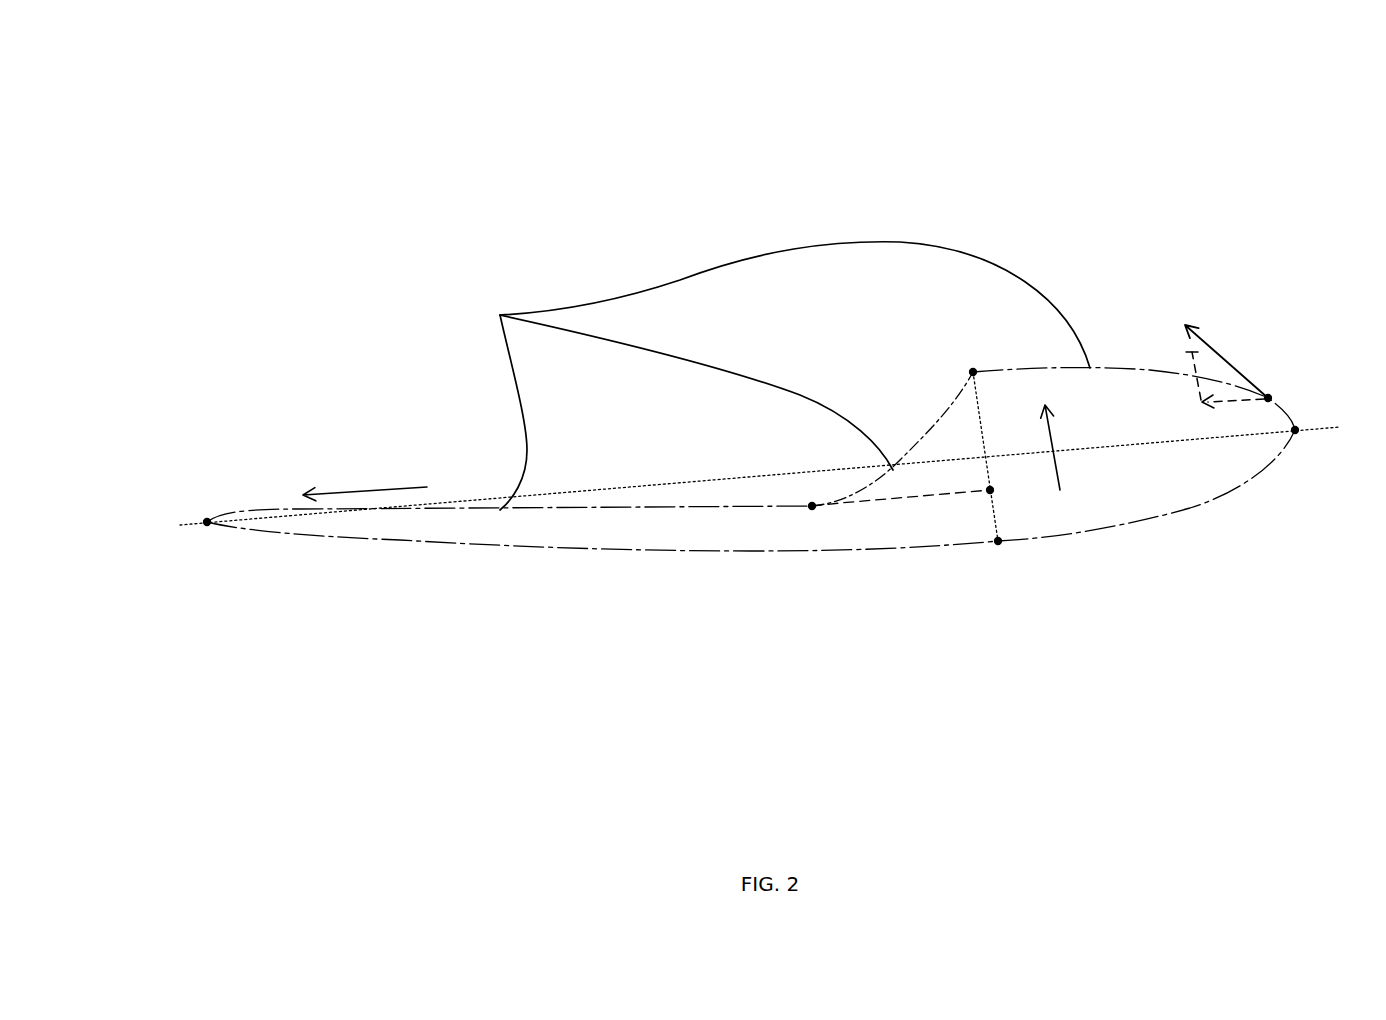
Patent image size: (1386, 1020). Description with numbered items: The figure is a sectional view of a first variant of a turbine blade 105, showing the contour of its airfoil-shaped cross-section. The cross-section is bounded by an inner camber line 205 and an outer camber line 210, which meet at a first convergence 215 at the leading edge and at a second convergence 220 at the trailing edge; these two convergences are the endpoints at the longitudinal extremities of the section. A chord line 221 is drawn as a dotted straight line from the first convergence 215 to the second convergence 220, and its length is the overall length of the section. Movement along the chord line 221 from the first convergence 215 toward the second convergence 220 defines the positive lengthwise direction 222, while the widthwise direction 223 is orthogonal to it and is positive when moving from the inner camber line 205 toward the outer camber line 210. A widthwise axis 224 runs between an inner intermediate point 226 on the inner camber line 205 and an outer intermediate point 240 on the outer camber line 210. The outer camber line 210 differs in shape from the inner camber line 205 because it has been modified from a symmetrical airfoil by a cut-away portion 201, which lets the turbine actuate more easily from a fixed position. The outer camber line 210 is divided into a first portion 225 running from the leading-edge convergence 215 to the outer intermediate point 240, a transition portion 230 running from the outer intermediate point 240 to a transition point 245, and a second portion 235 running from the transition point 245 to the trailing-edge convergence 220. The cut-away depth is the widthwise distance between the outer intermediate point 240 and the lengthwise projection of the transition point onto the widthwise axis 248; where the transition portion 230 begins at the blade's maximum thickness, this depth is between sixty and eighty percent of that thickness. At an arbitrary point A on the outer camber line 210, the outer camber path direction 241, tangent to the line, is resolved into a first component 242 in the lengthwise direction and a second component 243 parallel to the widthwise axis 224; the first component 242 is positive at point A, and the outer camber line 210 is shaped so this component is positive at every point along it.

The blade 105 is at (1229, 130).
The cut-away portion 201 is at (656, 420).
The inner camber line 205 is at (625, 550).
The outer camber line 210 is at (495, 401).
The first convergence 215 is at (1297, 433).
The second convergence 220 is at (207, 522).
The chord line 221 is at (617, 485).
The positive lengthwise direction 222 is at (333, 490).
The widthwise direction 223 is at (1057, 465).
The widthwise axis 224 is at (990, 470).
The first portion 225 is at (1132, 368).
The inner intermediate point 226 is at (997, 545).
The transition portion 230 is at (933, 430).
The second portion 235 is at (457, 510).
The outer intermediate point 240 is at (973, 372).
The outer camber path direction 241 is at (1210, 343).
The first component 242 is at (1233, 402).
The second component 243 is at (1192, 352).
The transition point 245 is at (812, 506).
The lengthwise projection of the transition point onto the widthwise axis 248 is at (990, 490).
The arbitrary point A is at (1270, 397).